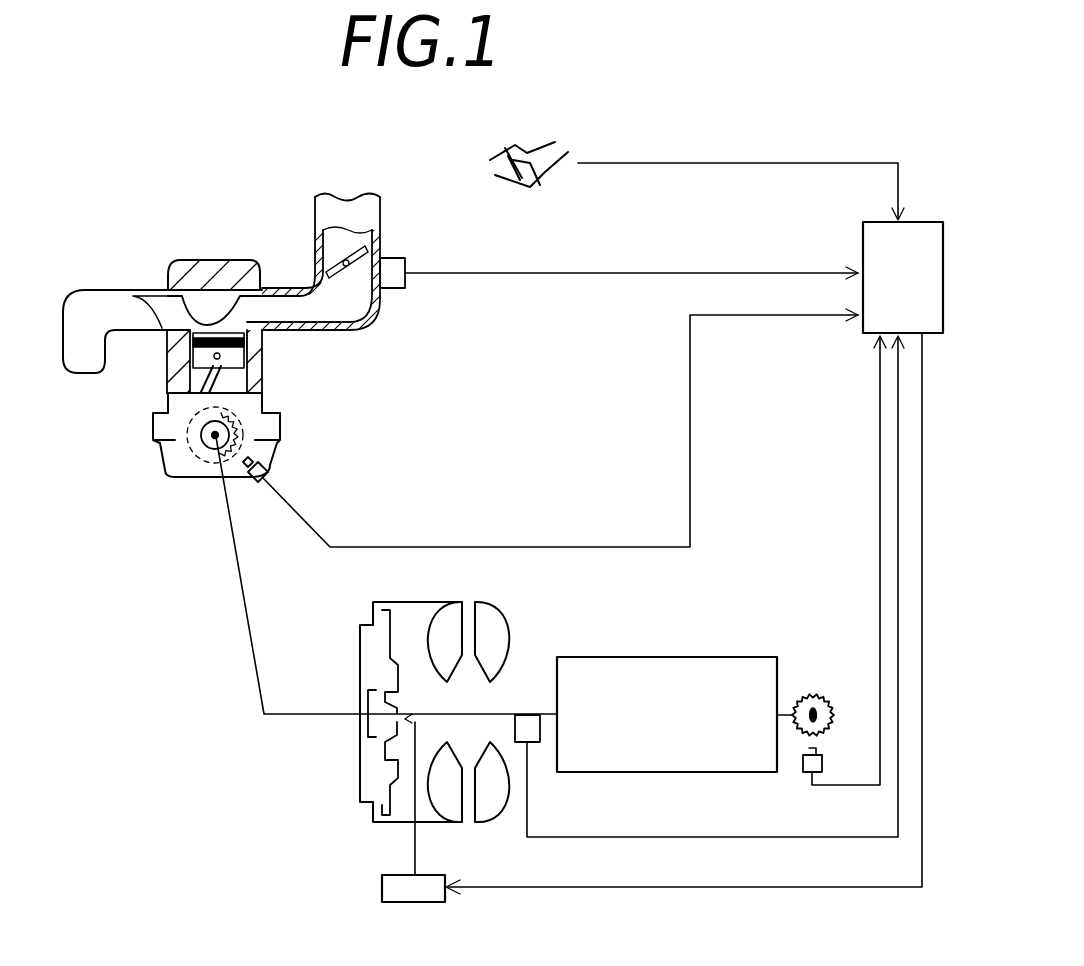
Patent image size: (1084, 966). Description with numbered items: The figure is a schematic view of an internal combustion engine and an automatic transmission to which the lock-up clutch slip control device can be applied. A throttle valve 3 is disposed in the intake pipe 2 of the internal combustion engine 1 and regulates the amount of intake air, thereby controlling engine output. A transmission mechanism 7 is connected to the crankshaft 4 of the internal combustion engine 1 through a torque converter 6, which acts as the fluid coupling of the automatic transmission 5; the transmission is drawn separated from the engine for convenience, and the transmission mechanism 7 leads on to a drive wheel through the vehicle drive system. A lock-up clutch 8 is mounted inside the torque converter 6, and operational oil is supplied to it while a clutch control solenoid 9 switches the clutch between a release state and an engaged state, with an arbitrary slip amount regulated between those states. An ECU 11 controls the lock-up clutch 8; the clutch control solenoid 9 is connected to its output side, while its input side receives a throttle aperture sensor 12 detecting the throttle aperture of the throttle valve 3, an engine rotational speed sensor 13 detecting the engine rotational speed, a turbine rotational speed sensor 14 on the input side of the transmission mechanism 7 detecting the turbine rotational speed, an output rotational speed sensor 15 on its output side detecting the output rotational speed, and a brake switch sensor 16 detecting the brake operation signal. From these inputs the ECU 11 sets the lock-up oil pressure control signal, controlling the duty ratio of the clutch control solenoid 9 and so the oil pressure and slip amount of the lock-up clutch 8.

The internal combustion engine 1 is at (215, 245).
The intake pipe 2 is at (315, 207).
The throttle valve 3 is at (349, 260).
The crankshaft 4 is at (228, 428).
The automatic transmission 5 is at (395, 629).
The torque converter 6 is at (415, 603).
The transmission mechanism 7 is at (656, 657).
The lock-up clutch 8 is at (383, 748).
The clutch control solenoid 9 is at (382, 887).
The ECU 11 is at (863, 235).
The throttle aperture sensor 12 is at (388, 257).
The engine rotational speed sensor 13 is at (270, 467).
The turbine rotational speed sensor 14 is at (520, 716).
The output rotational speed sensor 15 is at (816, 748).
The brake switch sensor 16 is at (494, 178).